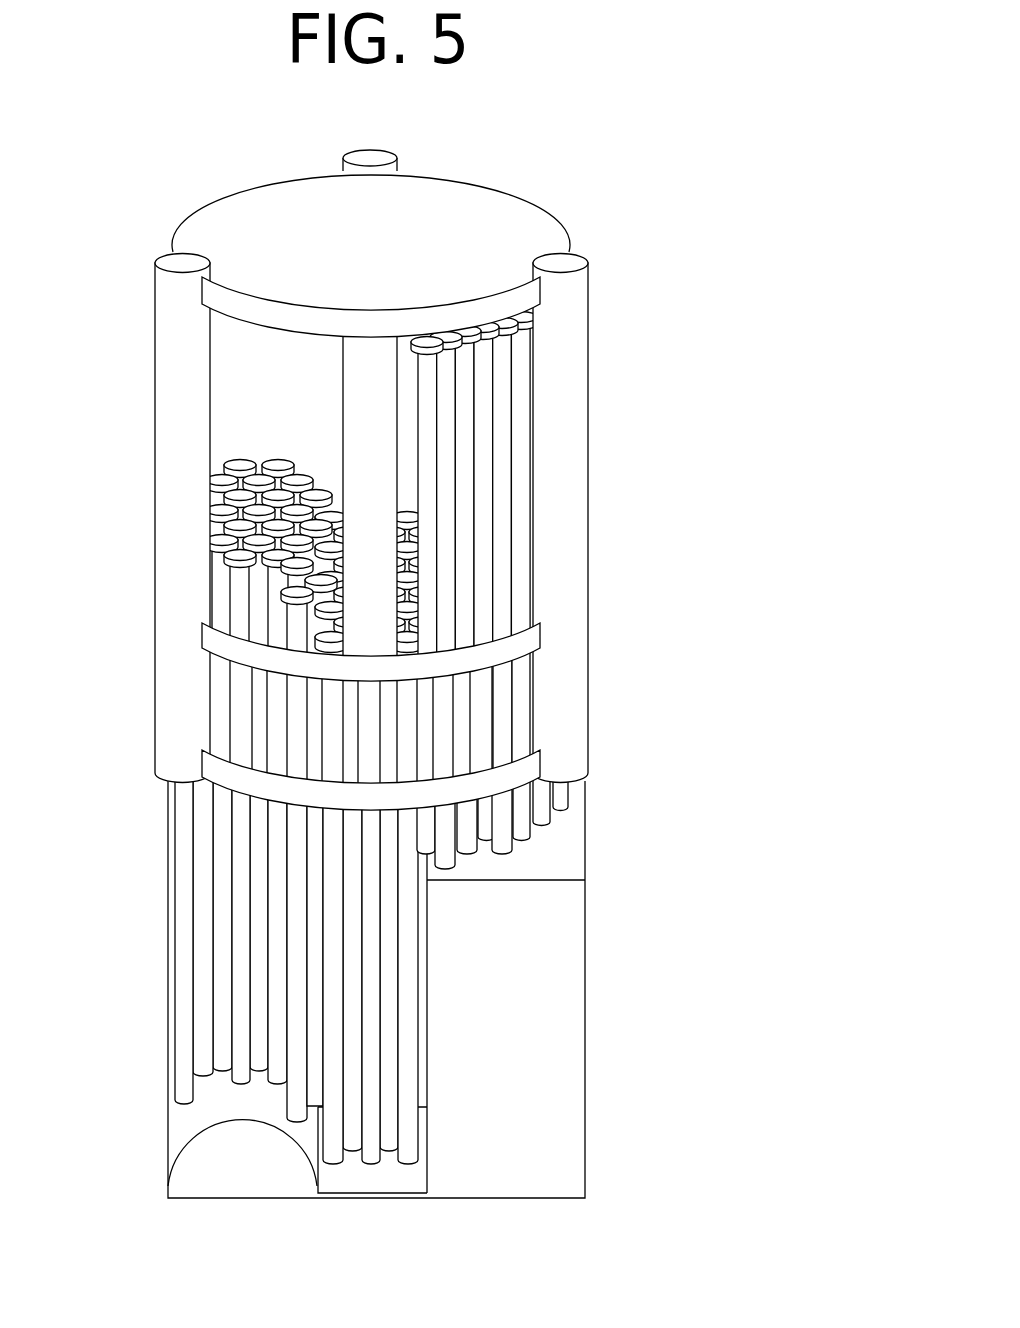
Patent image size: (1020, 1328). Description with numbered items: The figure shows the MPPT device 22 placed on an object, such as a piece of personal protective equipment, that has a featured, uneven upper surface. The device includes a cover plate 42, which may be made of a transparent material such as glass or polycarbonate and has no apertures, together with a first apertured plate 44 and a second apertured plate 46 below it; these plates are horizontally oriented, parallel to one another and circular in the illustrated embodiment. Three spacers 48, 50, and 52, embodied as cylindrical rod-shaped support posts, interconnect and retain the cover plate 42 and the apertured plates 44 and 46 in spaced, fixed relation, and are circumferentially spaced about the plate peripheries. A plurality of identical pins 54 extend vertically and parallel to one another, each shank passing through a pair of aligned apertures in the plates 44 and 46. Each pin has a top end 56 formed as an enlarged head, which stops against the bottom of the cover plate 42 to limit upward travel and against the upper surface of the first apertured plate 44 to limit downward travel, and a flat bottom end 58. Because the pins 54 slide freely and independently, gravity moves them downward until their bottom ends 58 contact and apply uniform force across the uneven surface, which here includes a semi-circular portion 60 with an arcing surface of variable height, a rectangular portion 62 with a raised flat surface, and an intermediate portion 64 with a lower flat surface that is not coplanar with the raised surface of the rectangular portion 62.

The MPPT device 22 is at (723, 438).
The cover plate 42 is at (250, 200).
The first apertured plate 44 is at (225, 647).
The second apertured plate 46 is at (225, 773).
The spacer 48 is at (160, 357).
The spacer 50 is at (583, 363).
The spacer 52 is at (372, 157).
The pins 54 is at (223, 887).
The top end 56 is at (278, 463).
The bottom end 58 is at (242, 1083).
The semi-circular portion 60 is at (183, 1167).
The rectangular portion 62 is at (585, 1035).
The intermediate portion 64 is at (350, 1185).